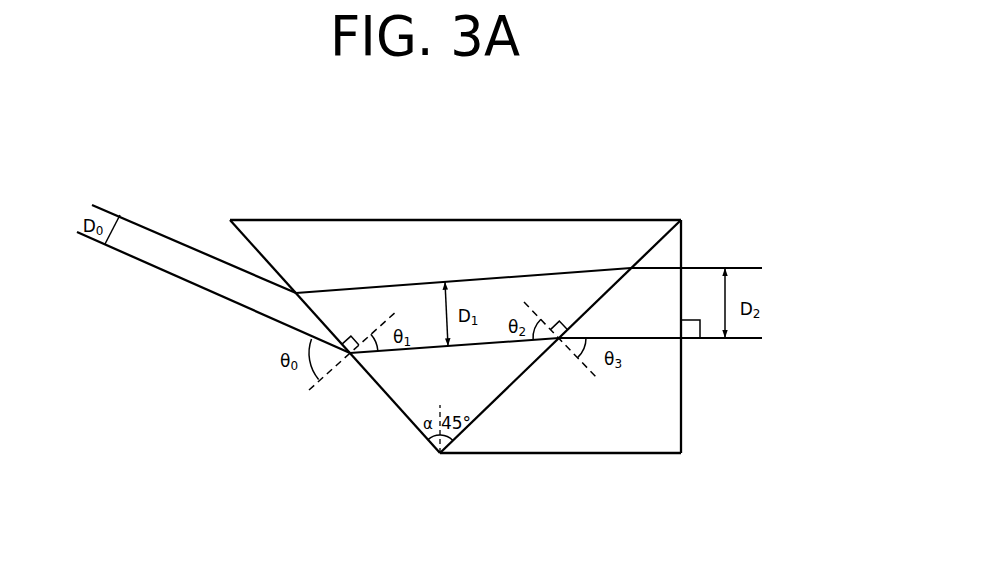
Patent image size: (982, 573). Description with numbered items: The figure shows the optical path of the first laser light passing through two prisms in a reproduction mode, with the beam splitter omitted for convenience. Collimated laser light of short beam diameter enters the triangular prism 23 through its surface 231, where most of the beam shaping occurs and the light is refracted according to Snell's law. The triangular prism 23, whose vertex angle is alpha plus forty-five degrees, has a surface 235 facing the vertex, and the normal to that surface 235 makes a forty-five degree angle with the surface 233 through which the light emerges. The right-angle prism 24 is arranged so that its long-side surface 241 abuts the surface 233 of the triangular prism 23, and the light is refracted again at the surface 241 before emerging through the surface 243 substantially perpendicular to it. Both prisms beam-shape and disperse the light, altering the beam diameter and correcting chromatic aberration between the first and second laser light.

The triangular prism 23 is at (477, 312).
The surface 231 is at (394, 402).
The surface 233 is at (643, 260).
The surface 235 is at (293, 220).
The right-angle prism 24 is at (624, 362).
The long-side surface 241 is at (500, 396).
The surface 243 is at (682, 442).